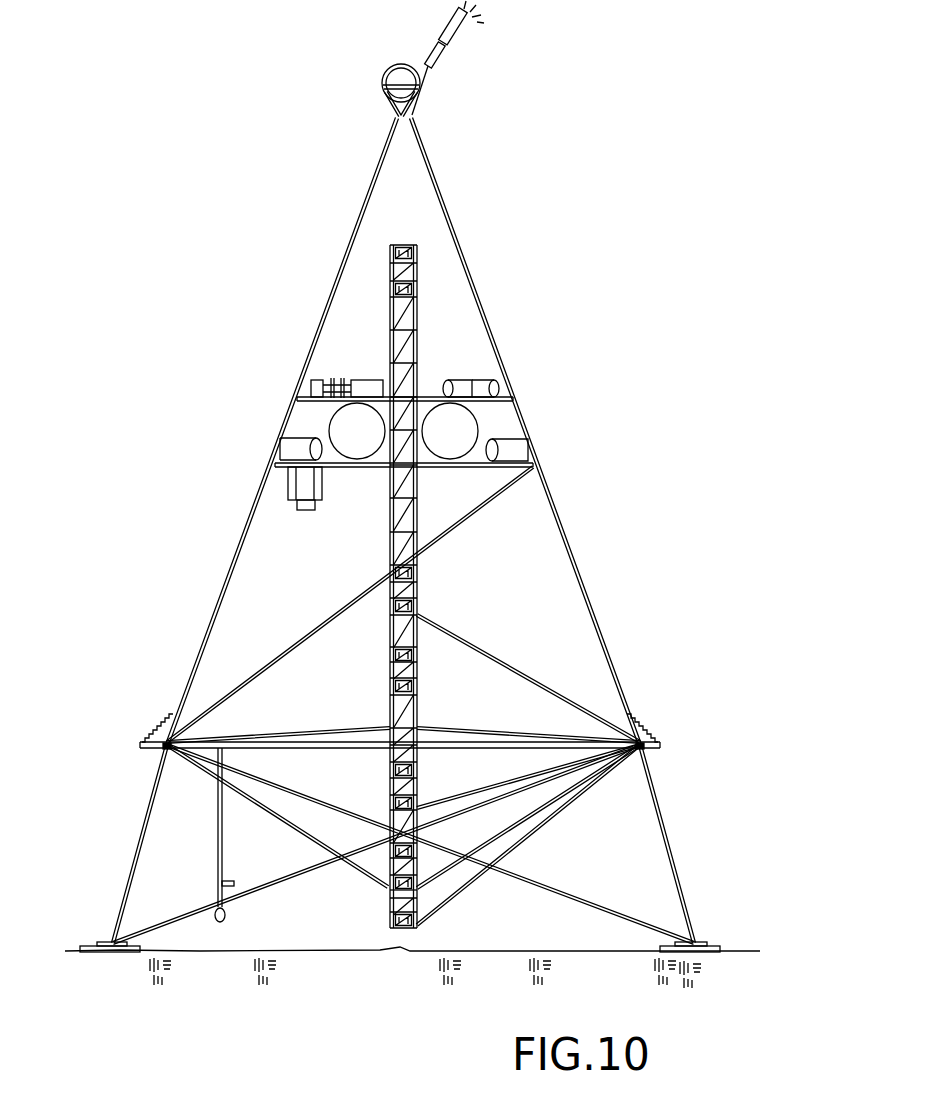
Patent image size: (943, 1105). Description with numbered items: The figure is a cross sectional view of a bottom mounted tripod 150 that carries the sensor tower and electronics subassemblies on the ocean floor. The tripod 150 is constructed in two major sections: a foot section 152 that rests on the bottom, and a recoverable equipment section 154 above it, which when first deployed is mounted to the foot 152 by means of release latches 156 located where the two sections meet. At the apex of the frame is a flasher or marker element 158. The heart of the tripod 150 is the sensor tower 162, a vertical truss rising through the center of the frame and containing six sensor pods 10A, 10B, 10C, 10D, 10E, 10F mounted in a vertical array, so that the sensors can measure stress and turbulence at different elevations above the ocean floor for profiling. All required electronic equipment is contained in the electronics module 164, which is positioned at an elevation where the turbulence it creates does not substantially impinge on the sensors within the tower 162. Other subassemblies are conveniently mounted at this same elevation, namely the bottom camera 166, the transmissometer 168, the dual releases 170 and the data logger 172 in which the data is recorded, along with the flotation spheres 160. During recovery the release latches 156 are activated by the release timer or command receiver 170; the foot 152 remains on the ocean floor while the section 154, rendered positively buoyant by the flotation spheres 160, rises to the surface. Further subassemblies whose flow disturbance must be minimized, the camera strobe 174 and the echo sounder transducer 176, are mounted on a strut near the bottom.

The bottom mounted tripod 150 is at (148, 613).
The foot section 152 is at (143, 800).
The recoverable equipment section 154 is at (213, 610).
The release latches 156 is at (153, 728).
The flasher light 158 is at (440, 30).
The flotation spheres 160 is at (328, 422).
The sensor tower 162 is at (425, 365).
The electronics module 164 is at (284, 438).
The bottom camera 166 is at (283, 483).
The transmissometer 168 is at (333, 375).
The dual releases 170 is at (507, 383).
The data logger 172 is at (535, 452).
The camera strobe 174 is at (223, 933).
The echo sounder transducer 176 is at (247, 891).
The sensor pod 10A is at (388, 905).
The sensor pod 10B is at (418, 858).
The sensor pod 10C is at (418, 790).
The sensor pod 10D is at (418, 663).
The sensor pod 10E is at (417, 594).
The sensor pod 10F is at (330, 256).